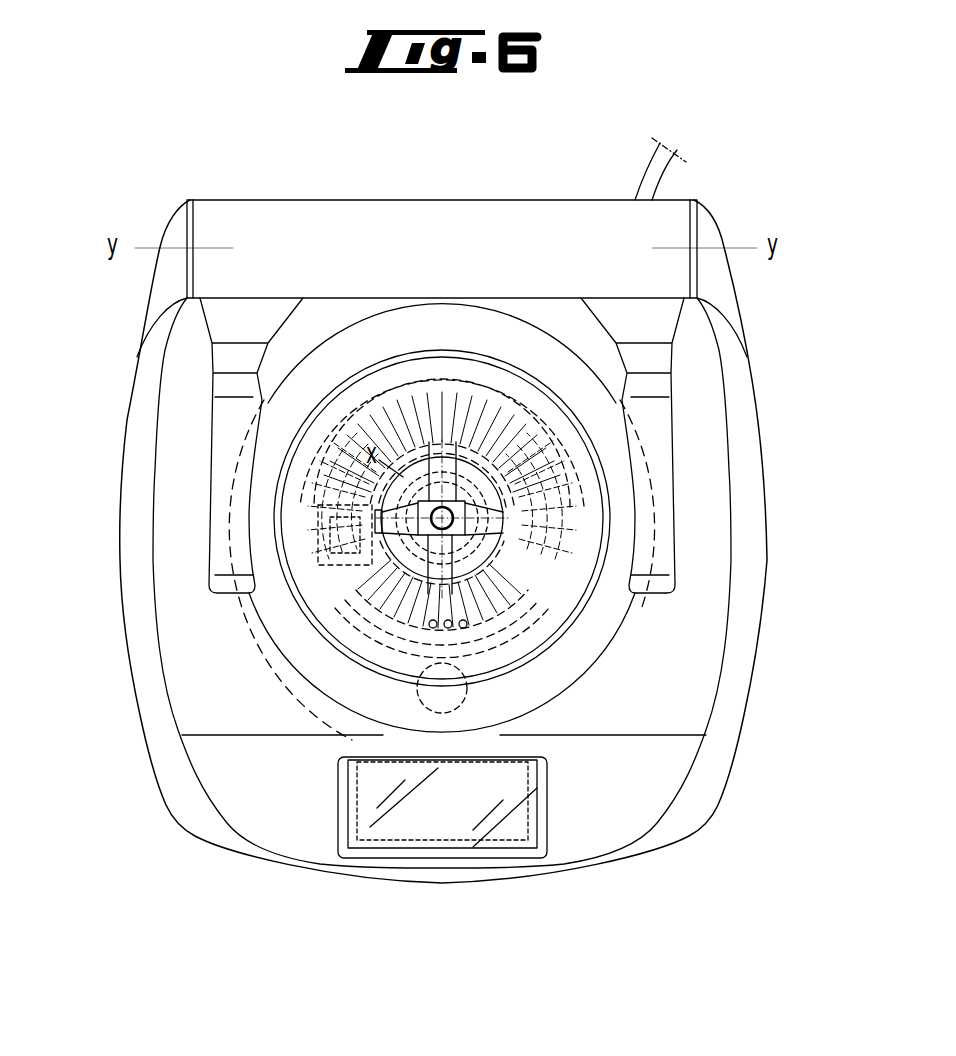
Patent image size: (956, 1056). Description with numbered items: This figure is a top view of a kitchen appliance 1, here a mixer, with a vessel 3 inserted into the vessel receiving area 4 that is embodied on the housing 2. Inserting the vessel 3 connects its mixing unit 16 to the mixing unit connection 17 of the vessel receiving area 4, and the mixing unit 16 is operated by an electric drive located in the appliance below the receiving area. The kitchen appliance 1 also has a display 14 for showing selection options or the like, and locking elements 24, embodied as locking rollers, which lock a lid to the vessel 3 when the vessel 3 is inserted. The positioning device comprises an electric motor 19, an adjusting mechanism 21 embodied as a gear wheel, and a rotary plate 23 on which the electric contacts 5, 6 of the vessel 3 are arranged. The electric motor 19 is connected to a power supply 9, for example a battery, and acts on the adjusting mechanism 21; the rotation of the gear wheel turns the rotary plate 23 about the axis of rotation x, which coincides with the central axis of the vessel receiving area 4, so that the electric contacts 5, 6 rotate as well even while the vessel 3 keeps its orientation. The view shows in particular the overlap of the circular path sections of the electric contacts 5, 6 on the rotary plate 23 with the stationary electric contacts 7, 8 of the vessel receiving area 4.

The kitchen appliance 1 is at (170, 146).
The housing 2 is at (148, 403).
The vessel 3 is at (360, 352).
The vessel receiving area 4 is at (270, 508).
The electric contact 5 is at (400, 612).
The electric contact 6 is at (473, 607).
The electric contact 7 is at (385, 587).
The electric contact 8 is at (400, 641).
The power supply 9 is at (650, 175).
The display 14 is at (367, 830).
The mixing unit 16 is at (438, 442).
The mixing unit connection 17 is at (503, 510).
The electric motor 19 is at (353, 473).
The adjusting mechanism 21 is at (383, 565).
The rotary plate 23 is at (478, 400).
The locking element 24 is at (218, 448).